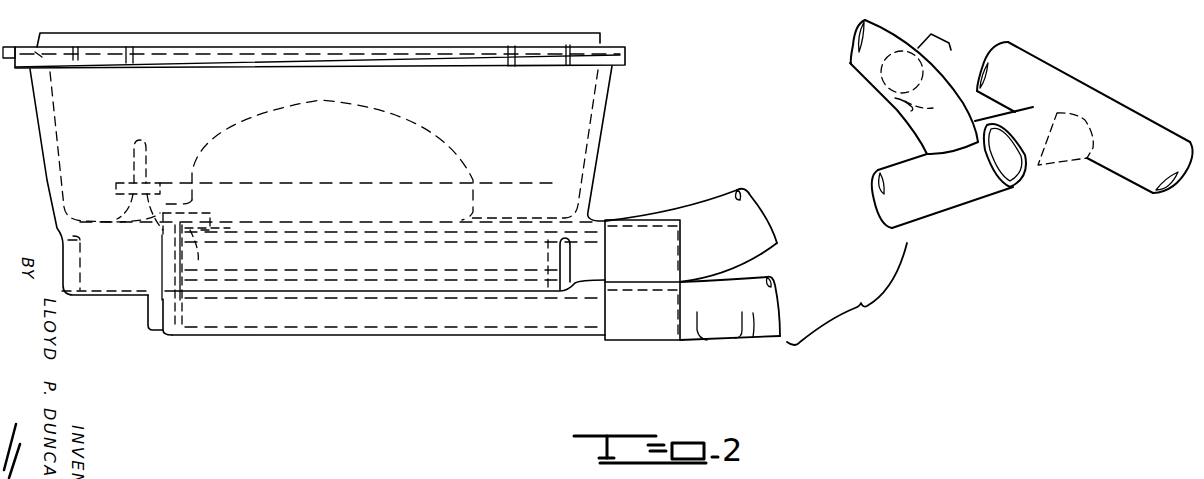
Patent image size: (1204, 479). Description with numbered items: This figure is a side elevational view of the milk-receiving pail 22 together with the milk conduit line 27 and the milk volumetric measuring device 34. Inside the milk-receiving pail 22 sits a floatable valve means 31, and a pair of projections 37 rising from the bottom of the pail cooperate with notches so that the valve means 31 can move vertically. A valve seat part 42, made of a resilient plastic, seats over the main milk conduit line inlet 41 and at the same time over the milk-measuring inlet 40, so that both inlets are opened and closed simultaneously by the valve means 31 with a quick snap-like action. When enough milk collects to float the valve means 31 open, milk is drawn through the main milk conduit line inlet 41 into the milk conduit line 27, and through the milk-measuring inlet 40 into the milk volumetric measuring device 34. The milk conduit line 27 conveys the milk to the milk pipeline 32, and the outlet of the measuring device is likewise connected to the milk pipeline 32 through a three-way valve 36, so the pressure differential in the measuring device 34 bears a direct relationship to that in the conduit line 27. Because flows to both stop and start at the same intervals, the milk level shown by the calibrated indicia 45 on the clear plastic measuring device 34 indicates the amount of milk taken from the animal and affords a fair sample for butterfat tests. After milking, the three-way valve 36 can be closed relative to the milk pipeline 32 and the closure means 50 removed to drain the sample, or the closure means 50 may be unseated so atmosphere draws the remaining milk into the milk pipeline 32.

The milk-receiving pail 22 is at (34, 118).
The milk conduit line 27 is at (705, 227).
The floatable valve means 31 is at (337, 143).
The milk pipeline 32 is at (1140, 115).
The milk volumetric measuring device 34 is at (752, 318).
The three-way valve 36 is at (950, 48).
The projections 37 is at (141, 150).
The milk-measuring inlet 40 is at (178, 226).
The main milk conduit line inlet 41 is at (194, 236).
The valve seat part 42 is at (210, 218).
The indicia 45 is at (737, 328).
The closure means 50 is at (153, 318).